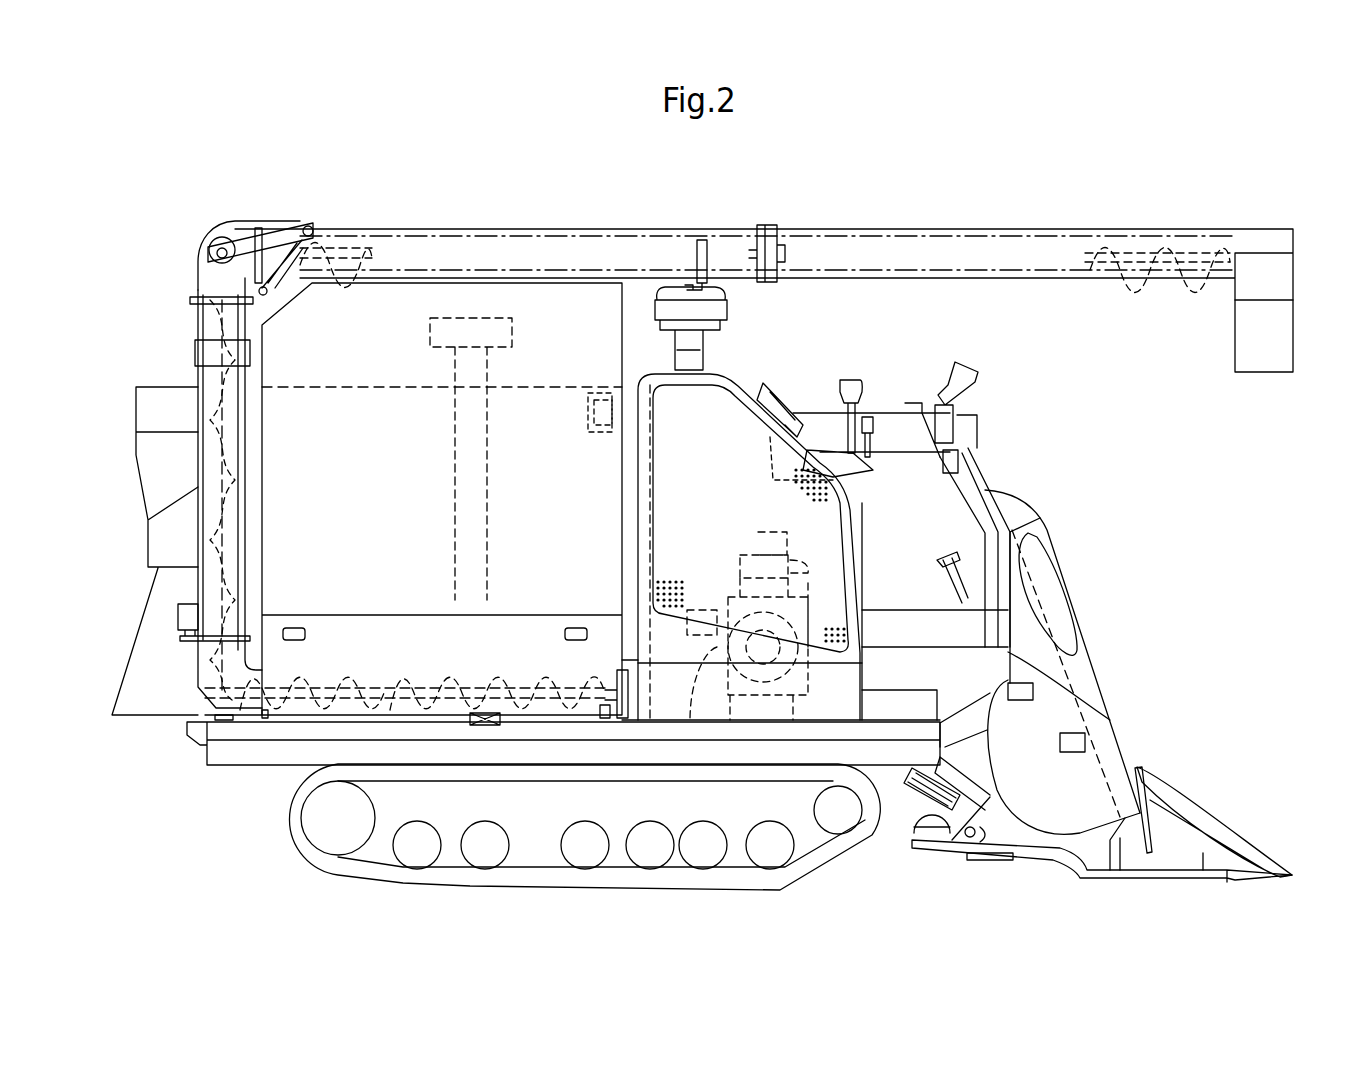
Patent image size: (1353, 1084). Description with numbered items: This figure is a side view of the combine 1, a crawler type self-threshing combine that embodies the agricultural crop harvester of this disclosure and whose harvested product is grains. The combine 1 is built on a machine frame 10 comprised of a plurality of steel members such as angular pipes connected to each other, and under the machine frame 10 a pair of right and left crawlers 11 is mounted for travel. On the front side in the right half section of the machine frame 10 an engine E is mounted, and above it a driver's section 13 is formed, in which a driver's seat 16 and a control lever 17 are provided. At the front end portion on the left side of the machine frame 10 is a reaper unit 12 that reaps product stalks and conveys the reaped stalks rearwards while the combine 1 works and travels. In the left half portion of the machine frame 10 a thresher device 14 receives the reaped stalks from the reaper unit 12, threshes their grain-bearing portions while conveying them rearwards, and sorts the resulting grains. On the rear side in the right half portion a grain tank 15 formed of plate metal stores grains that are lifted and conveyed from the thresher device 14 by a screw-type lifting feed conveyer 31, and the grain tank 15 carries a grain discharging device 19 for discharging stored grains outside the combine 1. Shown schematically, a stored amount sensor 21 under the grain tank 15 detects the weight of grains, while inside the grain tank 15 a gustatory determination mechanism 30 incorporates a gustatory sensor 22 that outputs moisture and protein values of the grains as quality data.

The combine 1 is at (170, 186).
The machine frame 10 is at (218, 753).
The crawlers 11 is at (528, 882).
The reaper unit 12 is at (1127, 647).
The driver's section 13 is at (915, 353).
The thresher device 14 is at (331, 386).
The grain tank 15 is at (553, 283).
The driver's seat 16 is at (777, 393).
The control lever 17 is at (851, 378).
The grain discharging device 19 is at (197, 331).
The stored amount sensor 21 is at (487, 727).
The gustatory sensor 22 is at (610, 390).
The gustatory determination mechanism 30 is at (575, 408).
The screw-type lifting feed conveyer 31 is at (488, 375).
The engine E is at (744, 626).